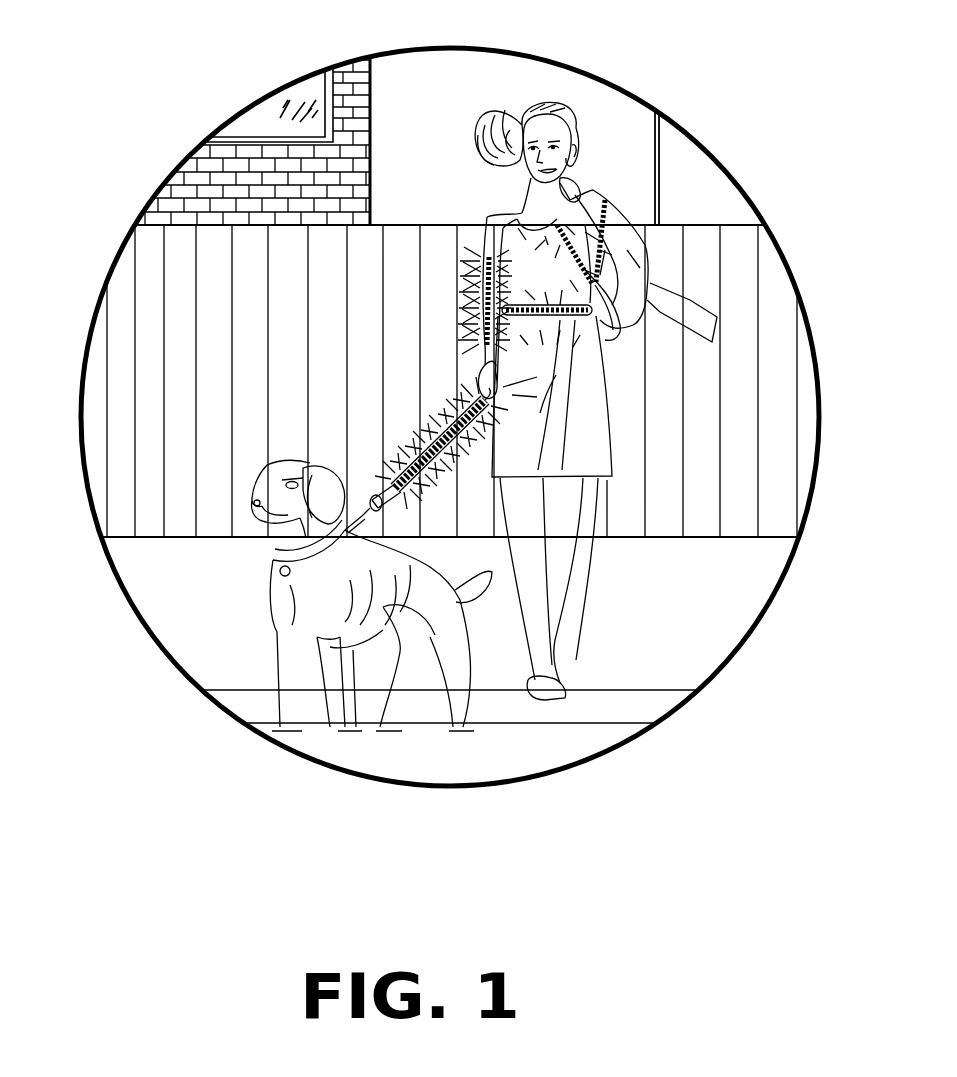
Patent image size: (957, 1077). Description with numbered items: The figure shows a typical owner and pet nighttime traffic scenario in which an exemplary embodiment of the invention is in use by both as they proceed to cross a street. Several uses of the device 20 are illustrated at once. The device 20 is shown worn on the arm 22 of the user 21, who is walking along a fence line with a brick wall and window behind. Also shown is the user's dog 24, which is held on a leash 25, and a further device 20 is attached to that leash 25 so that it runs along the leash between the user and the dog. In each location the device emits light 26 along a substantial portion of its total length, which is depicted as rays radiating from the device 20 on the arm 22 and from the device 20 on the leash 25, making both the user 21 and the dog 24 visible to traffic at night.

The device 20 is at (443, 283).
The user 21 is at (521, 213).
The arm 22 is at (622, 330).
The dog 24 is at (267, 577).
The leash 25 is at (405, 470).
The light 26 is at (455, 450).